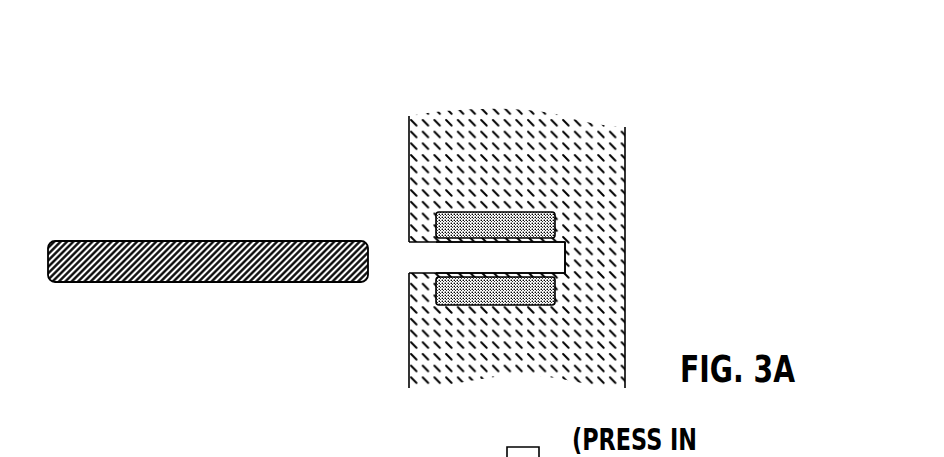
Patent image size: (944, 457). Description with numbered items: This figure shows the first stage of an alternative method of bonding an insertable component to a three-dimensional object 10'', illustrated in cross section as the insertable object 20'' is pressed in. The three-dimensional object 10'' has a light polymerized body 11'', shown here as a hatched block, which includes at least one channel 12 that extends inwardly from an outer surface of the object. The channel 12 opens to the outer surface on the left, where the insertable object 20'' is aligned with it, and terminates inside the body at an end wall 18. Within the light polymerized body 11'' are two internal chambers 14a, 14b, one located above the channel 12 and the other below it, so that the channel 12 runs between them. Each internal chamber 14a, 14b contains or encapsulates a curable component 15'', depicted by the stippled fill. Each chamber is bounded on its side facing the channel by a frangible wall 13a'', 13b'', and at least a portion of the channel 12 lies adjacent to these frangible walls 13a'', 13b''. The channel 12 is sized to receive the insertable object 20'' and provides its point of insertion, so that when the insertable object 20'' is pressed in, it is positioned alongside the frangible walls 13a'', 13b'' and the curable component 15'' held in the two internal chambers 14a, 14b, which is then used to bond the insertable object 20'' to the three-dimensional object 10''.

The three-dimensional object 10'' is at (533, 198).
The light polymerized body 11'' is at (464, 247).
The channel 12 is at (411, 255).
The frangible wall 13a'' is at (576, 199).
The frangible wall 13b'' is at (589, 253).
The internal chamber 14a is at (541, 213).
The internal chamber 14b is at (557, 293).
The curable component 15'' is at (437, 317).
The end wall 18 is at (566, 252).
The insertable object 20'' is at (185, 338).